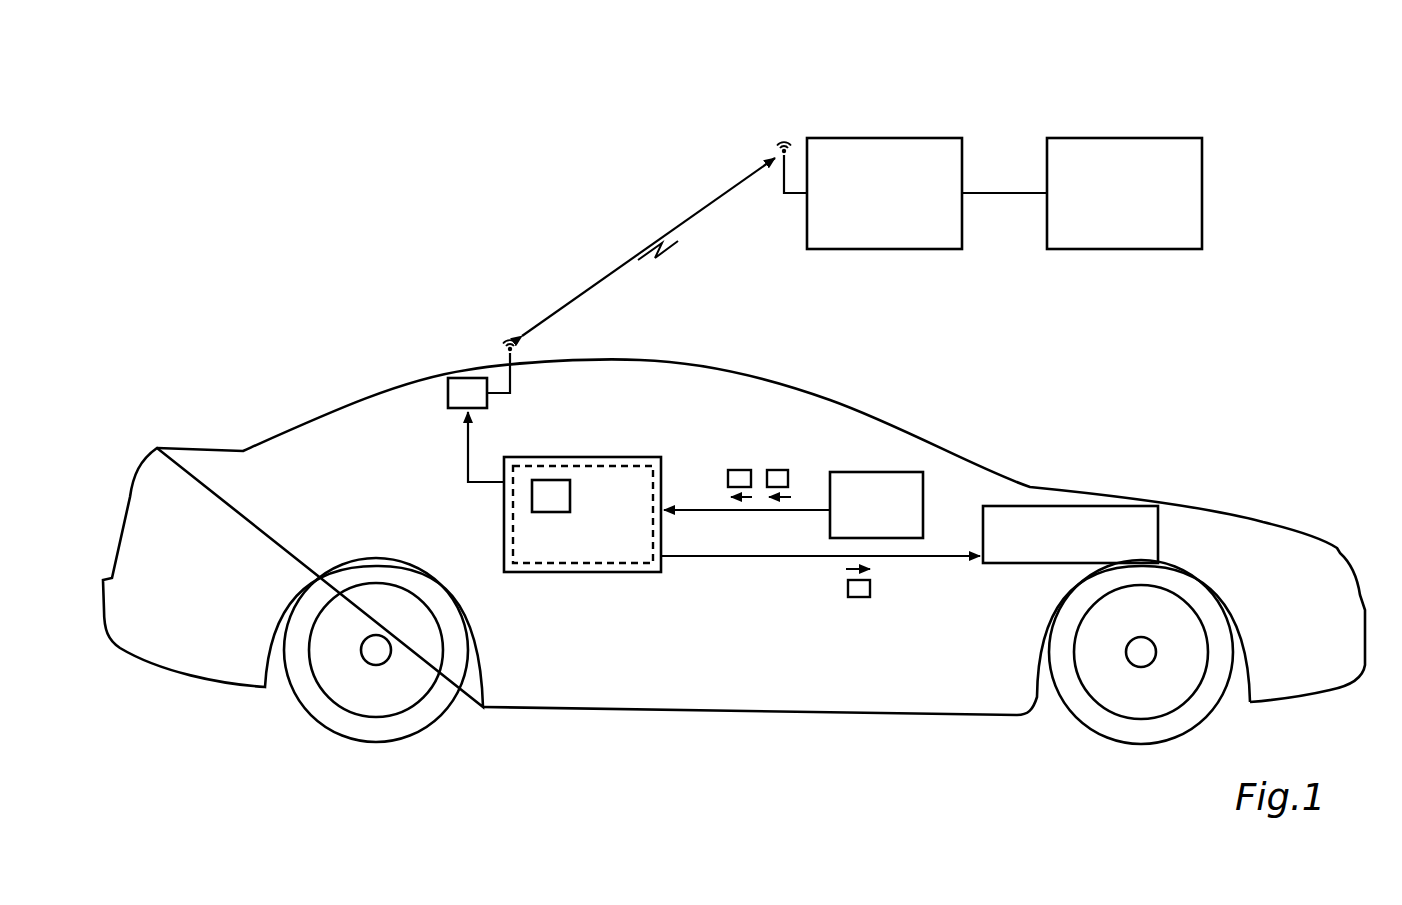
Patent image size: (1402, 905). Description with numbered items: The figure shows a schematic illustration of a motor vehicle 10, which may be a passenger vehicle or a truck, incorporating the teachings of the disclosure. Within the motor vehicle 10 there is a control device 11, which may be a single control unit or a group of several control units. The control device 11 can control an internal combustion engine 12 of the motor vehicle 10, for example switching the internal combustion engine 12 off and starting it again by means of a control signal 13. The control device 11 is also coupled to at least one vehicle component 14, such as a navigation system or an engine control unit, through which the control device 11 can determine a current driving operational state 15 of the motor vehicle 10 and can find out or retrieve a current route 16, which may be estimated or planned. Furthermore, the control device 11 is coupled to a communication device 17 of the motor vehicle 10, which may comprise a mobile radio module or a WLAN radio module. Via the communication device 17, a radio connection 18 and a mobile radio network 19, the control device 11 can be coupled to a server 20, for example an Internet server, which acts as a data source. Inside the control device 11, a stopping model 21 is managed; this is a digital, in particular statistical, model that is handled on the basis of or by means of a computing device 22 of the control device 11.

The motor vehicle 10 is at (463, 372).
The control device 11 is at (636, 457).
The internal combustion engine 12 is at (1158, 533).
The control signal 13 is at (870, 588).
The vehicle component 14 is at (830, 518).
The current driving operational state 15 is at (738, 470).
The current route 16 is at (777, 470).
The communication device 17 is at (448, 395).
The radio connection 18 is at (644, 254).
The mobile radio network 19 is at (878, 138).
The server 20 is at (1120, 138).
The stopping model 21 is at (552, 480).
The computing device 22 is at (583, 563).